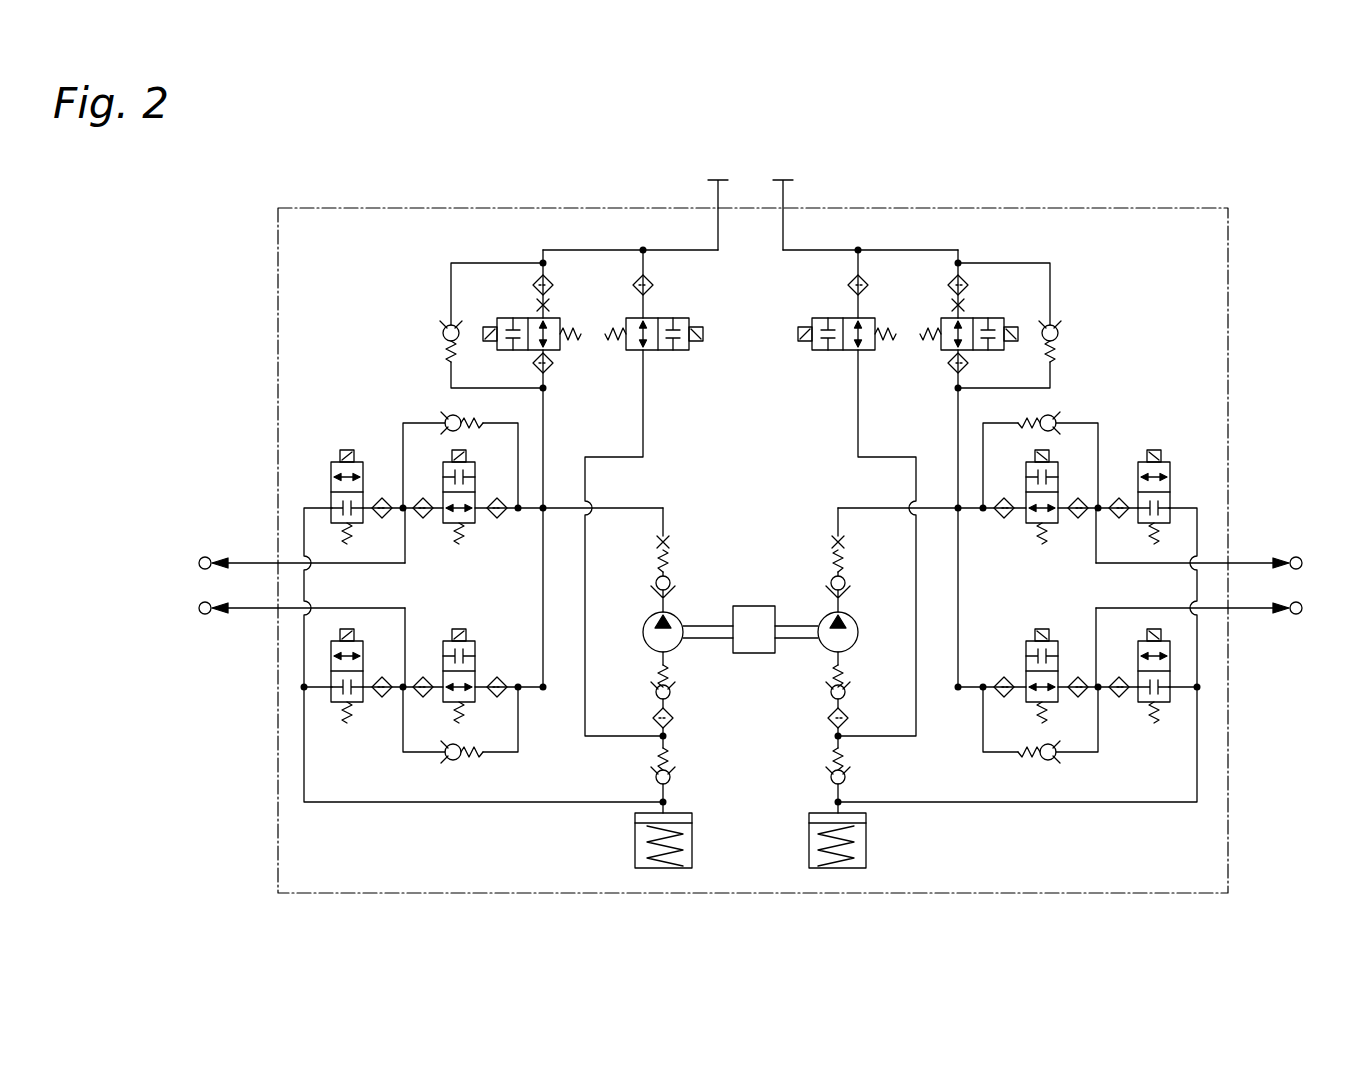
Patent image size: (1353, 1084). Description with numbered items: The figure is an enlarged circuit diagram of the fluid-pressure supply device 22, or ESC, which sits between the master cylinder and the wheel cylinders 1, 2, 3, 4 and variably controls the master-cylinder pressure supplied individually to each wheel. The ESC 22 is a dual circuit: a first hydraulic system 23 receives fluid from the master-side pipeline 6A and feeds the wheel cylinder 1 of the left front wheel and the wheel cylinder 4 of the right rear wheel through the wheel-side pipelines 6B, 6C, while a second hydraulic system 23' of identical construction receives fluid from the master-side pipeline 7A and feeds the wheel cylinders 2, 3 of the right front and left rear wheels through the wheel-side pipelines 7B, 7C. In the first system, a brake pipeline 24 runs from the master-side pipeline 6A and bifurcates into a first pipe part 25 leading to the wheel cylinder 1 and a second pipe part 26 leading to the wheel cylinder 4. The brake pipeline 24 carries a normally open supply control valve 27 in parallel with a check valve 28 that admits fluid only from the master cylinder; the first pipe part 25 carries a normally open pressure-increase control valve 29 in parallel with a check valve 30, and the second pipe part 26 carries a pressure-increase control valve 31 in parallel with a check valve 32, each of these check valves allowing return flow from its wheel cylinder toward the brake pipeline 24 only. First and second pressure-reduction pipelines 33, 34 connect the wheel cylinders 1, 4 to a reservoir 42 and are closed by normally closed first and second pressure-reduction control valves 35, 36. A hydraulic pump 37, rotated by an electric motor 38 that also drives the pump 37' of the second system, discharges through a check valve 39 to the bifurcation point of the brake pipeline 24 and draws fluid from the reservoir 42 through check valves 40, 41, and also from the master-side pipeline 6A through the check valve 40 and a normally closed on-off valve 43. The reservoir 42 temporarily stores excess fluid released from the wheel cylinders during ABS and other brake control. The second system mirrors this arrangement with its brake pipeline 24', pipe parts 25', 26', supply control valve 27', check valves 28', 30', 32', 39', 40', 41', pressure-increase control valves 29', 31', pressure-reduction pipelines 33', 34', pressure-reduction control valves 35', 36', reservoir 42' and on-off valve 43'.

The fluid-pressure supply device (ESC) 22 is at (276, 206).
The first hydraulic system 23 is at (630, 210).
The second hydraulic system 23' is at (870, 212).
The master-side pipeline 6A is at (714, 183).
The master-side pipeline 7A is at (787, 183).
The wheel-side pipeline 6B is at (268, 558).
The wheel-side pipeline 6C is at (268, 613).
The wheel-side pipeline 7B is at (1236, 558).
The wheel-side pipeline 7C is at (1236, 613).
The wheel cylinder 1 is at (200, 557).
The wheel cylinder 2 is at (1302, 557).
The wheel cylinder 3 is at (1302, 615).
The wheel cylinder 4 is at (200, 613).
The brake pipeline 24 is at (573, 470).
The brake pipeline 24' is at (924, 470).
The first pipe part 25 is at (483, 650).
The first pipe part 25' is at (1017, 650).
The second pipe part 26 is at (422, 645).
The second pipe part 26' is at (1079, 645).
The supply control valve 27 is at (532, 313).
The supply control valve 27' is at (974, 316).
The check valve 28 is at (459, 325).
The check valve 28' is at (1044, 325).
The pressure-increase control valve 29 is at (489, 502).
The pressure-increase control valve 29' is at (1012, 509).
The check valve 30 is at (448, 439).
The check valve 30' is at (1052, 439).
The pressure-increase control valve 31 is at (489, 667).
The pressure-increase control valve 31' is at (1012, 667).
The check valve 32 is at (446, 739).
The check valve 32' is at (1051, 739).
The first pressure-reduction pipeline 33 is at (324, 491).
The first pressure-reduction pipeline 33' is at (1180, 491).
The second pressure-reduction pipeline 34 is at (335, 689).
The second pressure-reduction pipeline 34' is at (1167, 689).
The first pressure-reduction control valve 35 is at (335, 430).
The first pressure-reduction control valve 35' is at (1168, 430).
The second pressure-reduction control valve 36 is at (376, 714).
The second pressure-reduction control valve 36' is at (1119, 715).
The hydraulic pump 37 is at (644, 623).
The hydraulic pump 37' is at (861, 623).
The electric motor 38 is at (754, 604).
The check valve 39 is at (683, 560).
The check valve 39' is at (819, 560).
The check valve 40 is at (692, 706).
The check valve 40' is at (805, 706).
The check valve 41 is at (694, 780).
The check valve 41' is at (806, 780).
The reservoir for fluid pressure control 42 is at (619, 840).
The reservoir for fluid pressure control 42' is at (879, 840).
The on-off valve 43 is at (644, 493).
The on-off valve 43' is at (855, 493).